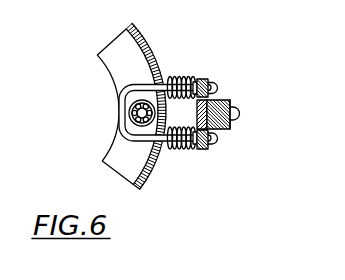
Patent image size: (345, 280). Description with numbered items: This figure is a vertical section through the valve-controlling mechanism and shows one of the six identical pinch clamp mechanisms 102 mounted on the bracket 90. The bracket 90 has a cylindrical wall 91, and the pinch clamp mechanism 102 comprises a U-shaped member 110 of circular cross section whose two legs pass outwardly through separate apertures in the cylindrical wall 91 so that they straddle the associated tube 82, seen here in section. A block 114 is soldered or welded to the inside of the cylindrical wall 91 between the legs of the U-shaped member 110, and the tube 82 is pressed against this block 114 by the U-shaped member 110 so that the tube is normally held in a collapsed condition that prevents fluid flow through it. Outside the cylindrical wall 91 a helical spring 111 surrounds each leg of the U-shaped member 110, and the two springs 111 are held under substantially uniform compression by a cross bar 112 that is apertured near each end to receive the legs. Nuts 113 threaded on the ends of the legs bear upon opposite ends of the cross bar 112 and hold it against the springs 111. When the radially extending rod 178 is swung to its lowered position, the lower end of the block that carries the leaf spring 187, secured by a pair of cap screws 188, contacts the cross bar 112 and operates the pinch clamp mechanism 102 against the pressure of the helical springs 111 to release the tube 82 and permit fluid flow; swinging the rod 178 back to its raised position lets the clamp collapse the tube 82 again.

The bracket 90 is at (102, 45).
The cylindrical wall 91 is at (143, 40).
The block 114 is at (117, 154).
The U-shaped member 110 is at (126, 100).
The tube 82 is at (131, 116).
The helical spring 111 is at (172, 77).
The cross bar 112 is at (199, 79).
The nuts 113 is at (218, 87).
The leaf spring 187 is at (228, 128).
The radially extending rod 178 is at (222, 130).
The cap screws 188 is at (239, 115).
The pinch clamp mechanism 102 is at (244, 172).